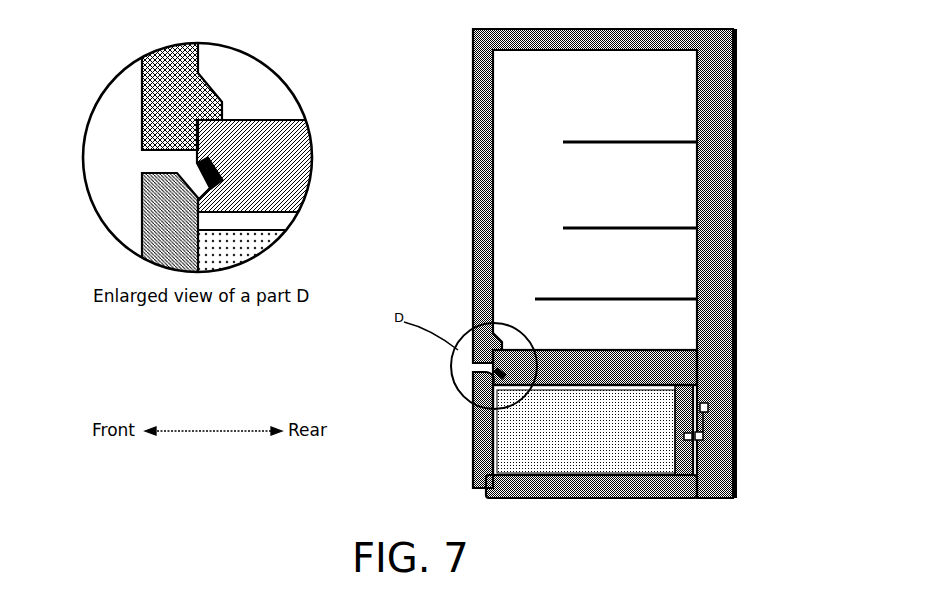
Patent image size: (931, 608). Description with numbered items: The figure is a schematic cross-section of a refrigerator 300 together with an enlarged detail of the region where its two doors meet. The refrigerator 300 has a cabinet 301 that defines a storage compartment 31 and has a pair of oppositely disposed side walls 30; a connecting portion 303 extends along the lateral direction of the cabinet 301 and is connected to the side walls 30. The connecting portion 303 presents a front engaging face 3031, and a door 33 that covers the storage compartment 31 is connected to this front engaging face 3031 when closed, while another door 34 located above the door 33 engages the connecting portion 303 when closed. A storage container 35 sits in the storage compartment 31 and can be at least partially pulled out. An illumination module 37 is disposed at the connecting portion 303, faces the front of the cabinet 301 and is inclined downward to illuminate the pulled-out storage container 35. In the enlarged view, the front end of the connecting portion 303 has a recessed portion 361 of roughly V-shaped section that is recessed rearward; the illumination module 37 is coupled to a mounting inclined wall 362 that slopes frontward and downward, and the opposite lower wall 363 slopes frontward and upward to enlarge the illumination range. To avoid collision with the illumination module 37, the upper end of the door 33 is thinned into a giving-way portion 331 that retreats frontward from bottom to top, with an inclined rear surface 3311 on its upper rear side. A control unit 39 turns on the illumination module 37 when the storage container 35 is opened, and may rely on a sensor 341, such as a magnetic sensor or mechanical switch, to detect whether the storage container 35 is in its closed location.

The refrigerator 300 is at (452, 146).
The side walls 30 is at (678, 267).
The cabinet 301 is at (720, 103).
The connecting portion 303 is at (610, 362).
The front engaging face 3031 is at (190, 214).
The storage compartment 31 is at (640, 390).
The door 33 is at (473, 445).
The giving-way portion 331 is at (170, 226).
The inclined surface of protrusion 3311 is at (180, 199).
The door 34 is at (473, 108).
The sensor 341 is at (704, 438).
The storage container 35 is at (608, 457).
The illumination module 37 is at (224, 182).
The control unit 39 is at (708, 407).
The recessed portion 361 is at (213, 192).
The mounting inclined wall 362 is at (216, 164).
The lower wall 363 is at (259, 248).